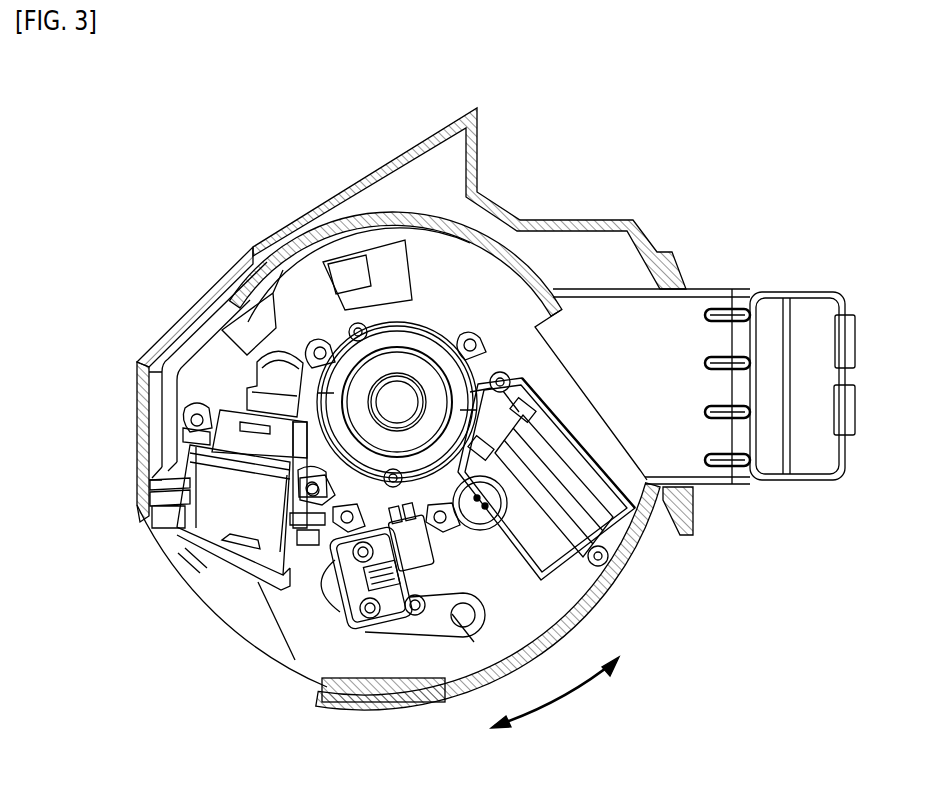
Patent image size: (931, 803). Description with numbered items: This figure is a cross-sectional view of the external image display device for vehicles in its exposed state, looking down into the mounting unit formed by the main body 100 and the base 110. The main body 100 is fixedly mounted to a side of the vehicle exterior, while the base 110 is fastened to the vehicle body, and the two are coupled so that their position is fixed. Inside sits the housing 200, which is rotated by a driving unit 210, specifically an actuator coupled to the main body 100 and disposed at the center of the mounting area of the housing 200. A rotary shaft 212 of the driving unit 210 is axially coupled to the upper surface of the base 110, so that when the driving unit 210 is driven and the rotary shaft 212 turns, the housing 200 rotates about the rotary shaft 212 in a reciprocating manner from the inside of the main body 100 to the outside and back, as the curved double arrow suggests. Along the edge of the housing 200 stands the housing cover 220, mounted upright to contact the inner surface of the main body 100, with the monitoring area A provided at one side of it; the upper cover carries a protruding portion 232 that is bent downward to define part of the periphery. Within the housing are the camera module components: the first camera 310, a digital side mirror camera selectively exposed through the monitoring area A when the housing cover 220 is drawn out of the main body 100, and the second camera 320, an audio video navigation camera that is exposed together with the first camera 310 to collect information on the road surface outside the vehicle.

The main body 100 is at (350, 192).
The base 110 is at (803, 462).
The housing 200 is at (460, 267).
The driving unit 210 is at (600, 525).
The rotary shaft 212 is at (403, 393).
The housing cover 220 is at (310, 667).
The protruding portion 232 is at (153, 422).
The first camera 310 is at (190, 537).
The second camera 320 is at (383, 623).
The monitoring area A is at (228, 606).